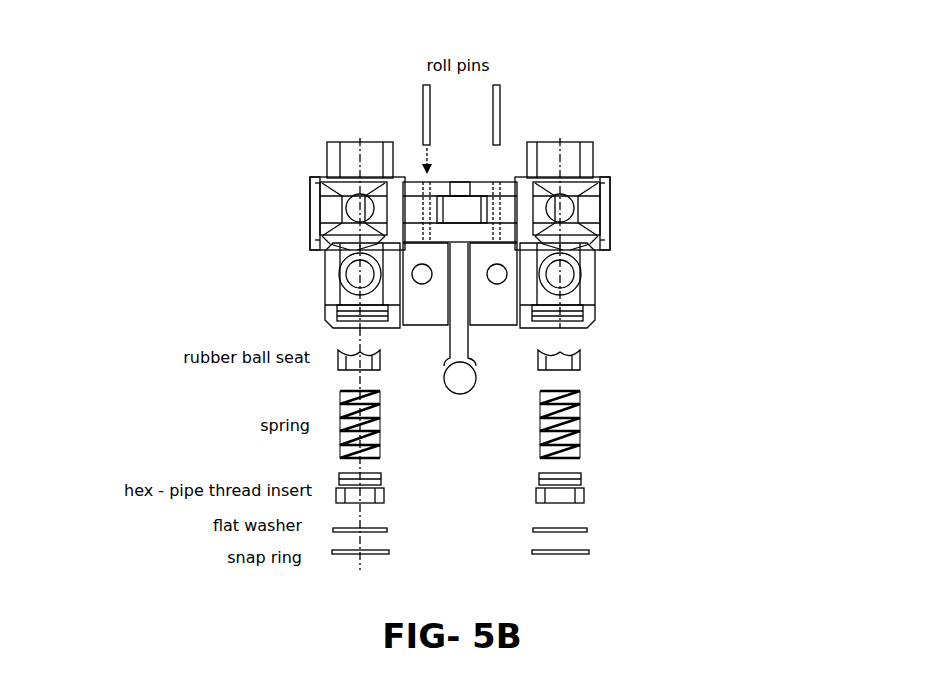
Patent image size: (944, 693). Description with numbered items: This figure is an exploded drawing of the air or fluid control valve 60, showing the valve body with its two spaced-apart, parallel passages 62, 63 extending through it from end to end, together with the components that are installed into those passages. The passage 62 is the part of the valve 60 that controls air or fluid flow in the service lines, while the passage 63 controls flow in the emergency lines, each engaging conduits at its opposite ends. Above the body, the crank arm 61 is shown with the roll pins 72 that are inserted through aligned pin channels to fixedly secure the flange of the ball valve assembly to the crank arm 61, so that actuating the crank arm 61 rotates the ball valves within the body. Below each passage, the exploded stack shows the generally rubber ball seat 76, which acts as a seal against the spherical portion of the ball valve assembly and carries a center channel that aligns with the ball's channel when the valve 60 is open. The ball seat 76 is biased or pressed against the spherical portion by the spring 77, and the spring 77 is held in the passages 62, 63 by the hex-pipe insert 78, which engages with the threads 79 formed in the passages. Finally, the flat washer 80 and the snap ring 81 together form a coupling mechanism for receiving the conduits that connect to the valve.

The control valve 60 is at (672, 137).
The crank arm 61 is at (462, 395).
The passage 62 is at (342, 141).
The passage 63 is at (573, 140).
The roll pins 72 is at (423, 104).
The ball seat 76 is at (581, 364).
The spring 77 is at (583, 413).
The hex-pipe insert 78 is at (583, 480).
The threads 79 is at (337, 322).
The flat washer 80 is at (588, 527).
The snap ring 81 is at (588, 552).